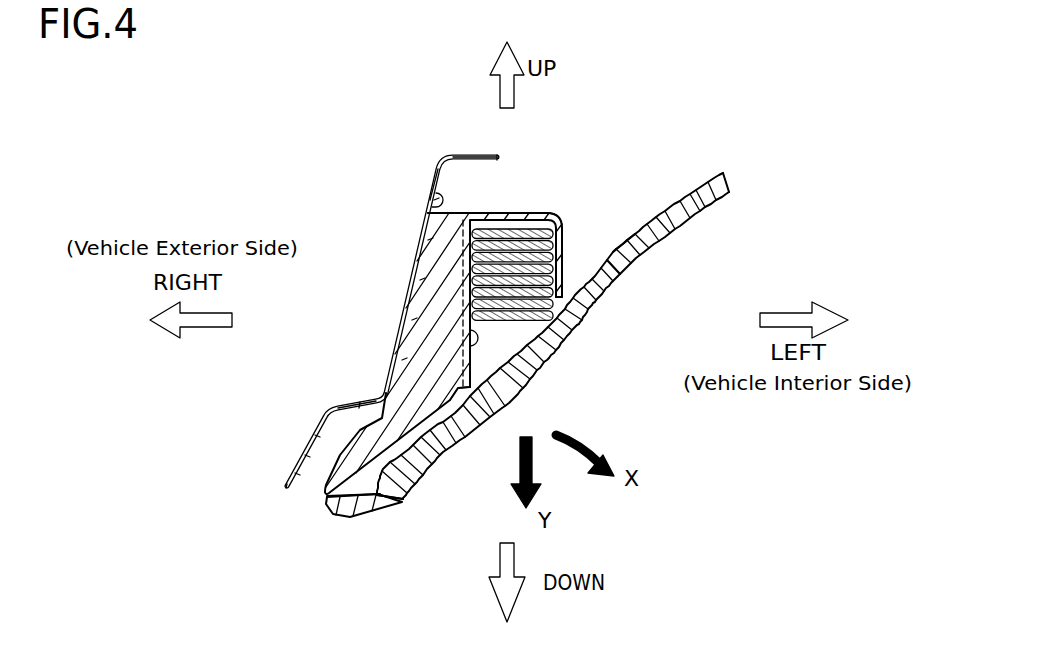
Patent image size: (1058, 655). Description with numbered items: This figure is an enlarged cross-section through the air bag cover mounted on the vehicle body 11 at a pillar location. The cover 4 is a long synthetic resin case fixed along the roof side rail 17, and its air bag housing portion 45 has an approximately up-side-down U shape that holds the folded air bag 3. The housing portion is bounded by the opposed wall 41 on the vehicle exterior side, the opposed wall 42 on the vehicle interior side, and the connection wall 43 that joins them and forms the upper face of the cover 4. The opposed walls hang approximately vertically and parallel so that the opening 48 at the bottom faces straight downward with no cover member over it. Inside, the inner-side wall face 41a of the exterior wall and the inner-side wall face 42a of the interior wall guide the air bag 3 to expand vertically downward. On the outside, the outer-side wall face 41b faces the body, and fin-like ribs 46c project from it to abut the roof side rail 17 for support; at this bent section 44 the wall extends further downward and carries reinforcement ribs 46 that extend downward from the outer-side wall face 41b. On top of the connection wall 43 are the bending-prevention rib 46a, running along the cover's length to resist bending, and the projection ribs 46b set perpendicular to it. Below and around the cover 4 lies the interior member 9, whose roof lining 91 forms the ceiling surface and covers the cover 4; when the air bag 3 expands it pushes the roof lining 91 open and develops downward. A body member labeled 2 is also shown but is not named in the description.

The vehicle body panel 2 is at (641, 149).
The air bag 3 is at (507, 325).
The cover 4 is at (560, 212).
The interior member 9 is at (410, 505).
The vehicle body 11 is at (447, 179).
The roof side rail 17 is at (433, 194).
The opposed wall 41 is at (462, 253).
The inner-side wall face 41a is at (468, 326).
The outer-side wall face 41b is at (460, 299).
The opposed wall 42 is at (612, 281).
The inner-side wall face 42a is at (628, 248).
The connection wall 43 is at (531, 219).
The bent section 44 is at (565, 236).
The air bag housing portion 45 is at (527, 323).
The reinforcement ribs 46 is at (336, 442).
The bending-prevention rib 46a is at (508, 220).
The projection rib 46b is at (560, 208).
The fin-like ribs 46c is at (360, 400).
The opening 48 is at (572, 300).
The roof lining 91 is at (383, 519).